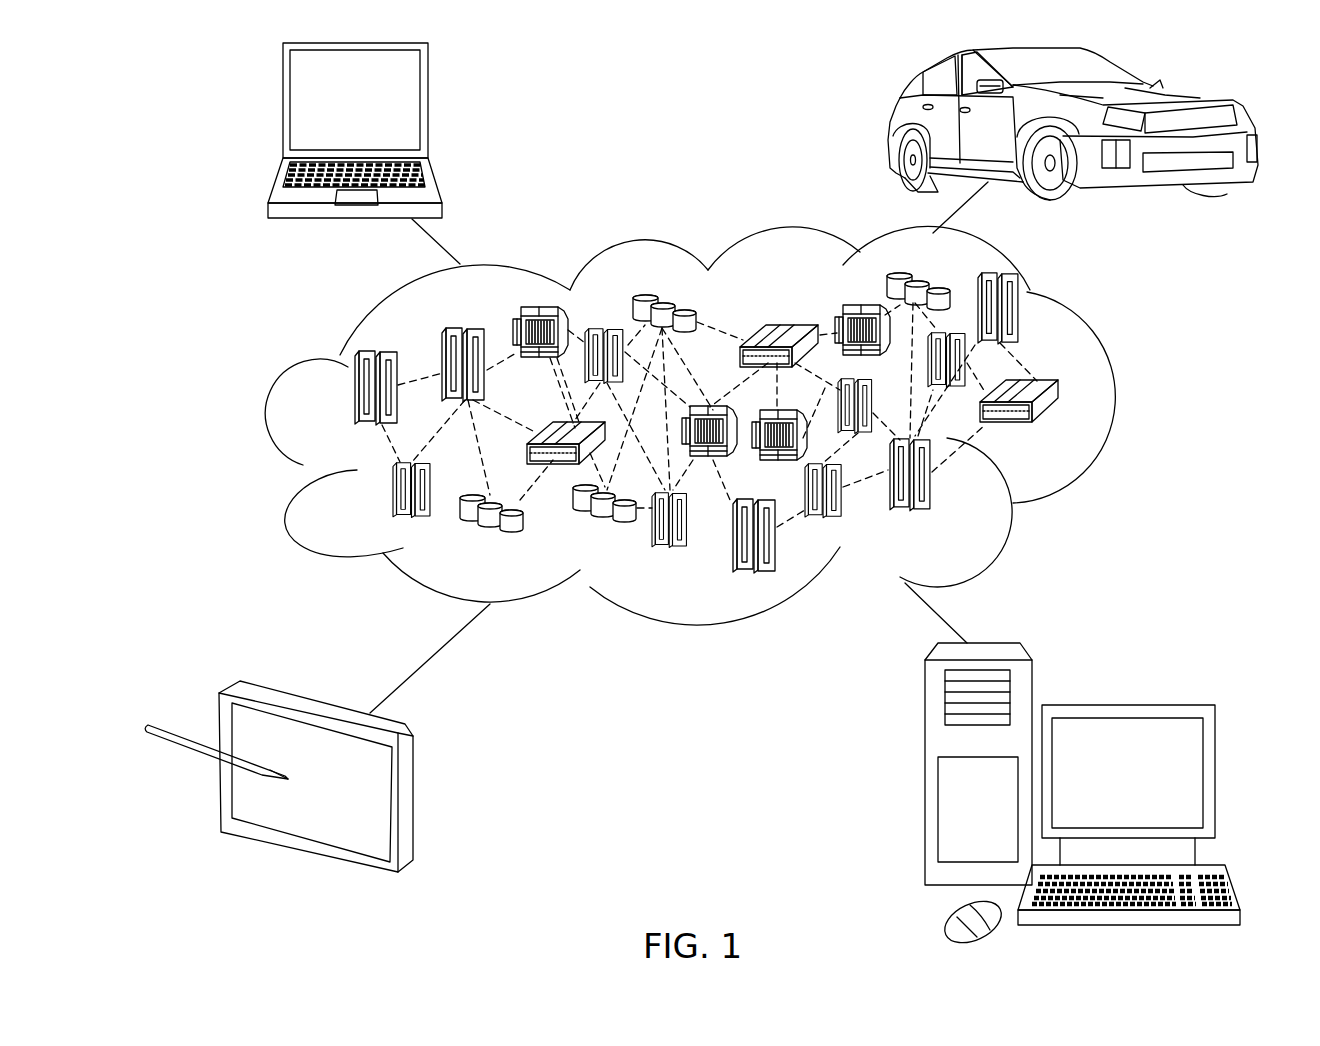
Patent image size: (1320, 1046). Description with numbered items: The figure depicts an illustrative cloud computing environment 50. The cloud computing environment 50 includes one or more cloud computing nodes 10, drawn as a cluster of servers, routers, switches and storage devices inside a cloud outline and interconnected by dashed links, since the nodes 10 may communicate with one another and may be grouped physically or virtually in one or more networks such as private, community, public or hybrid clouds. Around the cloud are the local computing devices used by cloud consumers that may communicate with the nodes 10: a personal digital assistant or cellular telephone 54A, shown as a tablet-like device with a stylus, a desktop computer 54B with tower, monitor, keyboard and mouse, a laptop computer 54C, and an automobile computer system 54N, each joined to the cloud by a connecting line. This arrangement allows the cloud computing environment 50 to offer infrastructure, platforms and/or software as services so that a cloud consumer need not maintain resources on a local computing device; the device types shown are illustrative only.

The cloud computing nodes 10 is at (1076, 436).
The cloud computing environment 50 is at (1127, 398).
The personal digital assistant or cellular telephone 54A is at (417, 803).
The desktop computer 54B is at (1122, 705).
The laptop computer 54C is at (428, 108).
The automobile computer system 54N is at (892, 127).